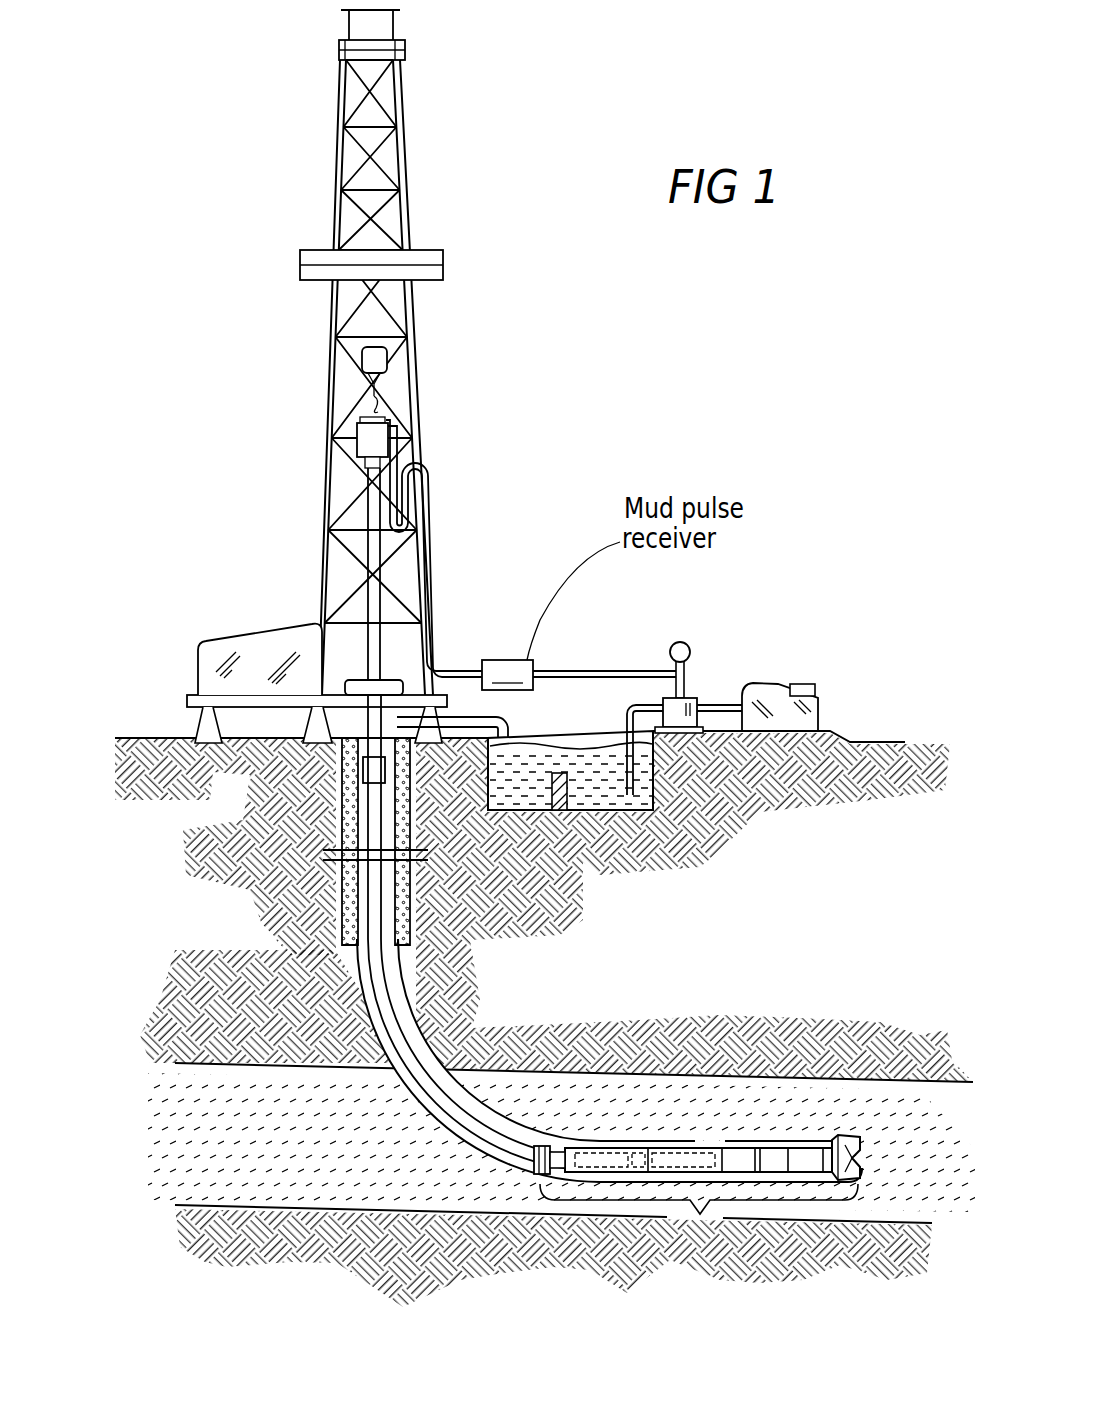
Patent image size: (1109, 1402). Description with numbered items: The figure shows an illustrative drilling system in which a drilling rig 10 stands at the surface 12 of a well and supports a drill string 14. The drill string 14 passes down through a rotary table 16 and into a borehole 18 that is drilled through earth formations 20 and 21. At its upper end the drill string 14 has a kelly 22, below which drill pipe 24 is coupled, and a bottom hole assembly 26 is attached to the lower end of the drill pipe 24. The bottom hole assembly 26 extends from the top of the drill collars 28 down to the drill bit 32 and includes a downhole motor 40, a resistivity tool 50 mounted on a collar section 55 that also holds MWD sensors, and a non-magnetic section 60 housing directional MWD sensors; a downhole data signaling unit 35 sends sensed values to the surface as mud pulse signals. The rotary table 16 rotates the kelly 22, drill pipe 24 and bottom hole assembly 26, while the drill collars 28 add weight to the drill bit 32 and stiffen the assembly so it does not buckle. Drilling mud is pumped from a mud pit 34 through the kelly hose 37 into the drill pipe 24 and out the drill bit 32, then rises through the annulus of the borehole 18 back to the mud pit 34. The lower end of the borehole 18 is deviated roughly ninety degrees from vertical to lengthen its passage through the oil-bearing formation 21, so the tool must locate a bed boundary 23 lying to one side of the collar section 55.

The drilling rig 10 is at (458, 421).
The surface 12 is at (876, 740).
The drill string 14 is at (392, 1077).
The rotary table 16 is at (387, 677).
The borehole 18 is at (362, 1007).
The earth formation 20 is at (846, 898).
The earth formation 21 is at (290, 1168).
The kelly 22 is at (383, 605).
The bed boundary 23 is at (950, 1083).
The drill pipe 24 is at (432, 1088).
The bottom hole assembly 26 is at (699, 1199).
The drill collar 28 is at (537, 1146).
The drill bit 32 is at (850, 1138).
The mud pit 34 is at (528, 800).
The downhole data signaling unit 35 is at (630, 1155).
The kelly hose 37 is at (613, 670).
The downhole motor 40 is at (808, 1160).
The resistivity tool 50 is at (712, 1140).
The collar section 55 is at (673, 1150).
The non-magnetic section 60 is at (580, 1150).